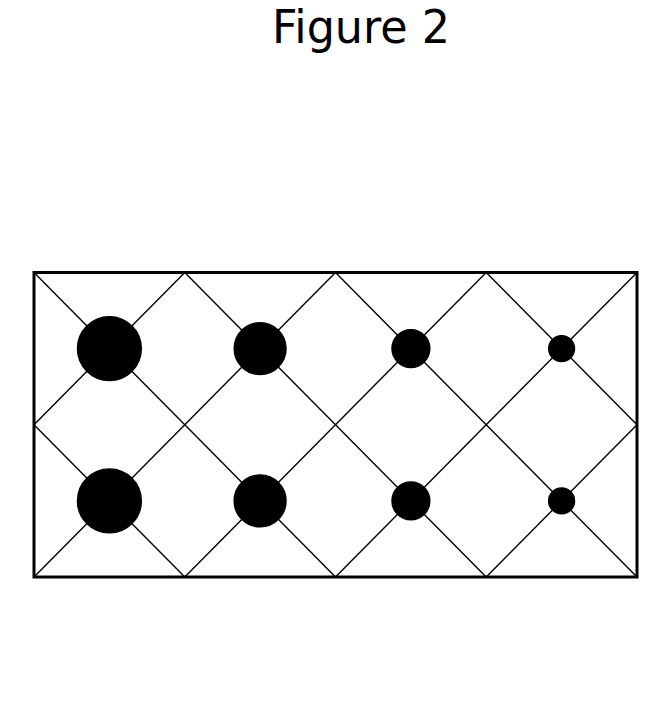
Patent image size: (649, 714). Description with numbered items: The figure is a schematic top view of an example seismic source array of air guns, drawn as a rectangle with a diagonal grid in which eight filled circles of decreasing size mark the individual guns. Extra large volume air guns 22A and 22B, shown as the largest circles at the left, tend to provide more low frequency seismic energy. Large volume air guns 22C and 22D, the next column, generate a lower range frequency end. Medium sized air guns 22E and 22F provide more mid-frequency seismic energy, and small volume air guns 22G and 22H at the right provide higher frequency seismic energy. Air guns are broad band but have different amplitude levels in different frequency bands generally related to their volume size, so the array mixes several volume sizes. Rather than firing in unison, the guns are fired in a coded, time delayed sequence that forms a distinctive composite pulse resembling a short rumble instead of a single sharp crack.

The extra large volume air gun 22A is at (117, 317).
The extra large volume air gun 22B is at (113, 533).
The large volume air gun 22C is at (263, 323).
The large volume air gun 22D is at (262, 525).
The medium sized air gun 22E is at (410, 329).
The medium sized air gun 22F is at (411, 520).
The small volume air gun 22G is at (562, 336).
The small volume air gun 22H is at (562, 515).